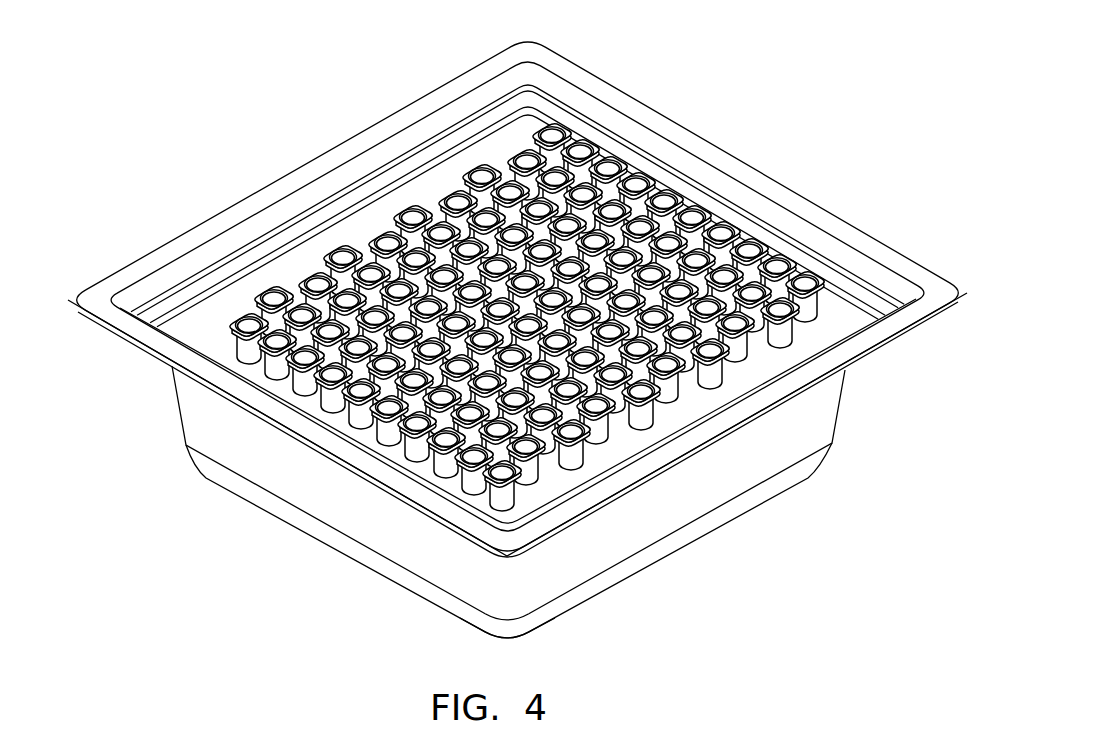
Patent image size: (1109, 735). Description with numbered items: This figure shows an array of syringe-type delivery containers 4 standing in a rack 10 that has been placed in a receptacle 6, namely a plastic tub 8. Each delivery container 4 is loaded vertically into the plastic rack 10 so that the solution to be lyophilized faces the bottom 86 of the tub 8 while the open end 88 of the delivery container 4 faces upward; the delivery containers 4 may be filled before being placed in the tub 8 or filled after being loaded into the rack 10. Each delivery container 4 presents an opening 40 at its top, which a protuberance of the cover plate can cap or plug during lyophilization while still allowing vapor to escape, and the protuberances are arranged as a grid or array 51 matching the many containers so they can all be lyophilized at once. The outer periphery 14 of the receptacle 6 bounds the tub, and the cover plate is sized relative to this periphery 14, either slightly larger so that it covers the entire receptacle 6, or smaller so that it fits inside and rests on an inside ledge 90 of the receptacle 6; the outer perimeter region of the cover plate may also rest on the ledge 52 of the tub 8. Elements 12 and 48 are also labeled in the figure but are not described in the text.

The delivery container 4 is at (228, 333).
The receptacle 6 is at (255, 470).
The tub 8 is at (832, 422).
The rack 10 is at (745, 380).
The tray bottom 12 is at (348, 553).
The periphery 14 is at (826, 210).
The opening 40 is at (600, 425).
The sample tube 48 is at (655, 405).
The grid or array 51 is at (665, 150).
The ledge 52 is at (742, 197).
The bottom 86 is at (530, 638).
The open end 88 is at (410, 213).
The inside ledge 90 is at (573, 122).